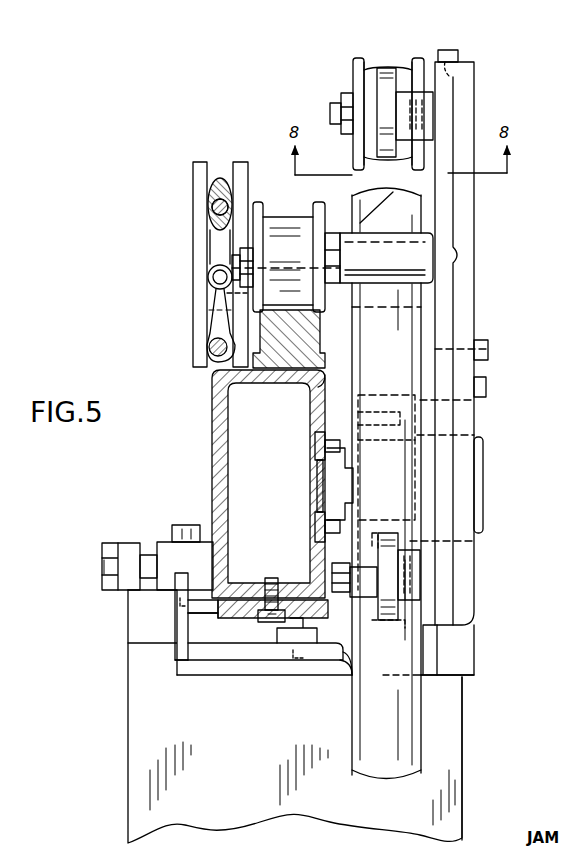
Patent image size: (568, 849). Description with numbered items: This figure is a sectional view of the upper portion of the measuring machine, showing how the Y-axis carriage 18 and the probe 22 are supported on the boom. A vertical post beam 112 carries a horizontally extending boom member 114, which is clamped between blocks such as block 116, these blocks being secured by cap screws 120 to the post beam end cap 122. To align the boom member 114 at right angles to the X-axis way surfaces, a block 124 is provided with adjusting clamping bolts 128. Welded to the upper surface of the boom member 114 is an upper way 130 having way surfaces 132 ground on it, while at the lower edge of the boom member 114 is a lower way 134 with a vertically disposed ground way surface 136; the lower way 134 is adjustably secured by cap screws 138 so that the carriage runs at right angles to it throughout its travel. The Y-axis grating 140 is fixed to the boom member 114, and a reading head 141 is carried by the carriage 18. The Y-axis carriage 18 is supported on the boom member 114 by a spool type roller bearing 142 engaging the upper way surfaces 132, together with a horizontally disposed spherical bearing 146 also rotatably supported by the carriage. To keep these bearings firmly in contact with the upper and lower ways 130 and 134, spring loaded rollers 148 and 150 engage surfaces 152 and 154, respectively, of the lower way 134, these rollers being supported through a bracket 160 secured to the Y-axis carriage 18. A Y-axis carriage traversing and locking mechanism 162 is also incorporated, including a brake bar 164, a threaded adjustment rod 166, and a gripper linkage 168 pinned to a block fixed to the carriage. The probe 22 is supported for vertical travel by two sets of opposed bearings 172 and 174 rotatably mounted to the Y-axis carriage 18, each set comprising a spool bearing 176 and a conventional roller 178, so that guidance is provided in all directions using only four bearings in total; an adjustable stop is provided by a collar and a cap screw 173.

The Y-axis carriage 18 is at (476, 312).
The probe 22 is at (410, 708).
The vertical post beam 112 is at (128, 777).
The boom member 114 is at (212, 431).
The block 116 is at (152, 543).
The cap screws 120 is at (186, 525).
The post beam end cap 122 is at (128, 643).
The block 124 is at (108, 552).
The adjusting clamping bolts 128 is at (100, 575).
The upper way 130 is at (327, 378).
The way surfaces 132 is at (321, 332).
The lower way 134 is at (236, 618).
The way surface 136 is at (286, 610).
The cap screws 138 is at (272, 578).
The Y-axis grating 140 is at (316, 492).
The reading head 141 is at (333, 496).
The spool type roller bearing 142 is at (290, 217).
The spherical bearing 146 is at (353, 632).
The spring loaded roller 148 is at (197, 573).
The spring loaded roller 150 is at (310, 660).
The surface 152 is at (237, 608).
The surface 154 is at (222, 660).
The bracket 160 is at (183, 695).
The Y-axis carriage traversing and locking mechanism 162 is at (190, 243).
The brake bar 164 is at (218, 178).
The threaded adjustment rod 166 is at (207, 345).
The gripper linkage 168 is at (207, 280).
The opposed bearings 172 is at (384, 54).
The cap screw 173 is at (458, 52).
The opposed bearings 174 is at (392, 630).
The spool bearing 176 is at (353, 62).
The roller 178 is at (390, 68).